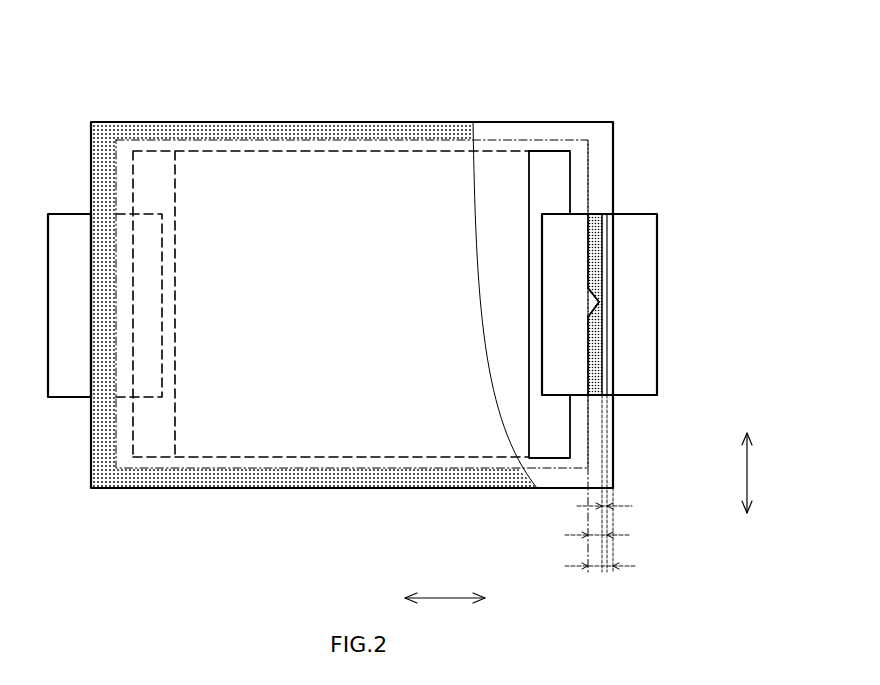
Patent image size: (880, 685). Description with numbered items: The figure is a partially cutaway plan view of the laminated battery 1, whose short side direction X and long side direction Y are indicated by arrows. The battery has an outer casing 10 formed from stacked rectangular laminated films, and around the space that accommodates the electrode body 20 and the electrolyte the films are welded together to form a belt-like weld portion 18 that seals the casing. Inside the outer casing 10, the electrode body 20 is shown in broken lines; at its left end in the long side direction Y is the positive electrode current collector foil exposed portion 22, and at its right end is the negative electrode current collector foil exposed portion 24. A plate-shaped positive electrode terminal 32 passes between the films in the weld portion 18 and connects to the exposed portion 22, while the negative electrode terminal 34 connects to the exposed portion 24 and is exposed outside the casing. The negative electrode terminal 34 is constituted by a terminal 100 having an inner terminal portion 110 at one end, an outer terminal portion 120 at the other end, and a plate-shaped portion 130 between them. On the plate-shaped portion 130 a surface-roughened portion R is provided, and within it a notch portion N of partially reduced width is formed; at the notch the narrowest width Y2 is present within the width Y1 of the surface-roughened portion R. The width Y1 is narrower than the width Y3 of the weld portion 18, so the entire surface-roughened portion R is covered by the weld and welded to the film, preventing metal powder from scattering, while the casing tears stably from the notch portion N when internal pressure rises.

The laminated battery 1 is at (669, 66).
The outer casing 10 is at (237, 491).
The weld portion 18 is at (258, 132).
The electrode body 20 is at (423, 151).
The positive electrode current collector foil exposed portion 22 is at (158, 158).
The negative electrode current collector foil exposed portion 24 is at (551, 158).
The positive electrode terminal 32 is at (68, 220).
The negative electrode terminal 34 is at (645, 220).
The terminal 100 is at (599, 304).
The inner terminal portion 110 is at (552, 383).
The outer terminal portion 120 is at (645, 365).
The plate-shaped portion 130 is at (596, 214).
The surface-roughened portion R is at (603, 250).
The notch portion N is at (603, 298).
The width of the surface-roughened portion Y1 is at (595, 537).
The narrowest width Y2 is at (600, 508).
The width of the weld portion Y3 is at (598, 568).
The short side direction X is at (755, 473).
The long side direction Y is at (445, 612).